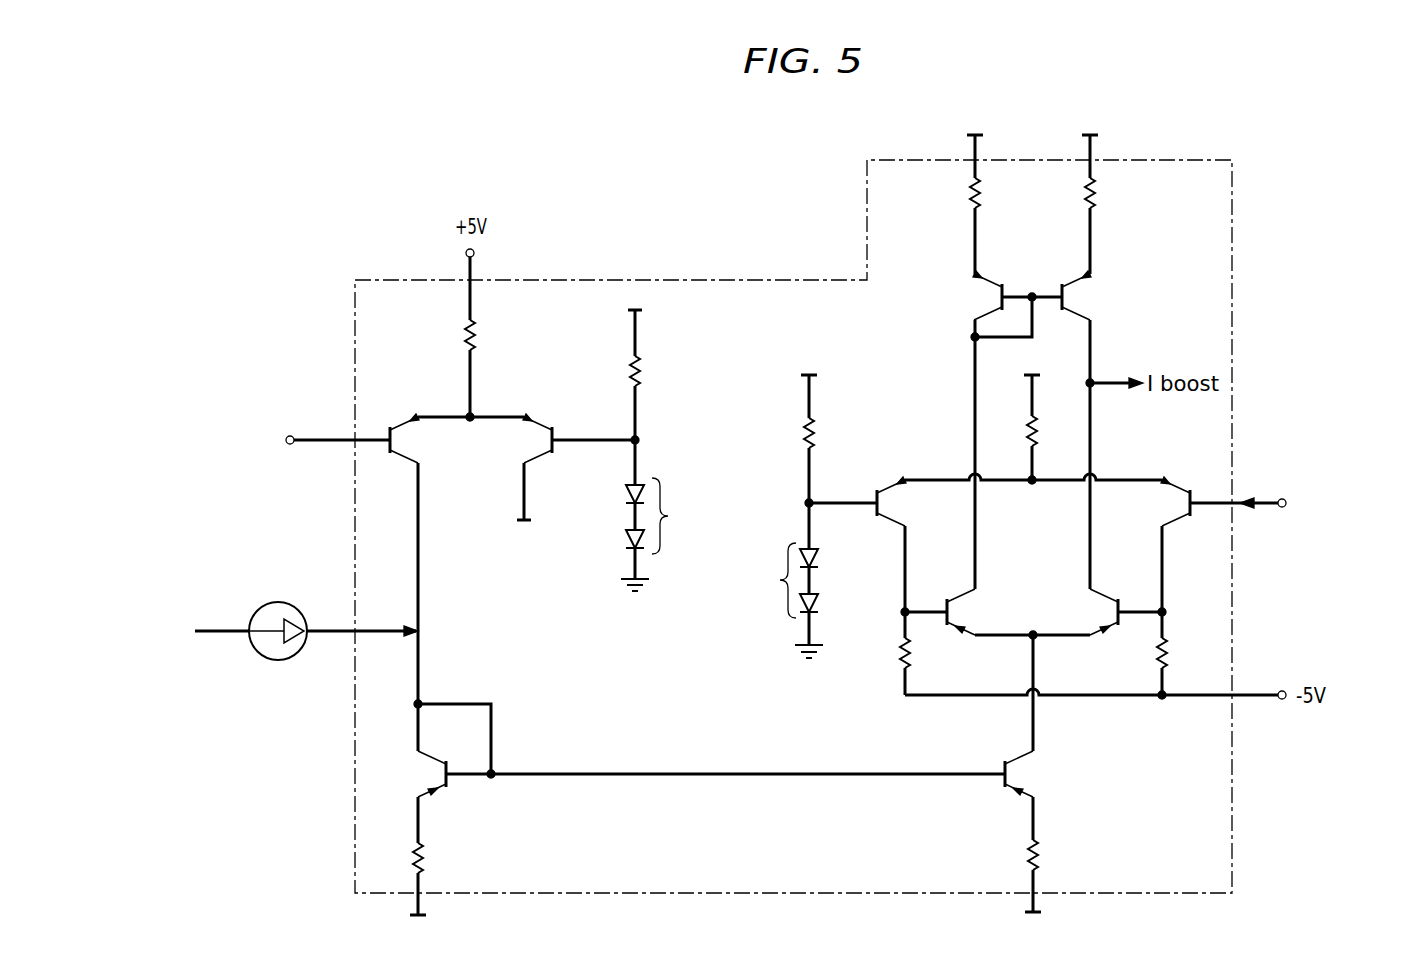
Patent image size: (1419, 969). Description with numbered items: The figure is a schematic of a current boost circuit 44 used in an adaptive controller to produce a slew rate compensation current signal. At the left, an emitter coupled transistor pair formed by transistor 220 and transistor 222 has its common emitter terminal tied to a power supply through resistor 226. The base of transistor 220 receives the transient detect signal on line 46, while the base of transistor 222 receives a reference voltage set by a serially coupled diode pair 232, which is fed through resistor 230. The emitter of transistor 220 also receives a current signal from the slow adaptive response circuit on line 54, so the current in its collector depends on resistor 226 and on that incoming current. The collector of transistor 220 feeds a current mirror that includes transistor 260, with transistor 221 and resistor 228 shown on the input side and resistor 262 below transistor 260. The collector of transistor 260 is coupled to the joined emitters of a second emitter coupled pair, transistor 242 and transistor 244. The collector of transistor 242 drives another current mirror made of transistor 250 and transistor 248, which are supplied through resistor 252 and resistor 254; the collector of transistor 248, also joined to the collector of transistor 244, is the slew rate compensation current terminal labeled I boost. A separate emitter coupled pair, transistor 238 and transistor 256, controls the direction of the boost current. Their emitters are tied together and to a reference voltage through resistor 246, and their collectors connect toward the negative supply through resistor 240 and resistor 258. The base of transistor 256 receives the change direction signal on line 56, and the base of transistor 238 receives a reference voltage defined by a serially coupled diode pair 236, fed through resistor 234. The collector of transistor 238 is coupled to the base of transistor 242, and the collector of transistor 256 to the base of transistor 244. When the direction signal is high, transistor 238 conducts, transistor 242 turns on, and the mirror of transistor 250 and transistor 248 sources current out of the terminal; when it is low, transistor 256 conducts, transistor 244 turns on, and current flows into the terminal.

The current boost circuit 44 is at (1179, 893).
The line 46 is at (327, 446).
The line 54 is at (223, 633).
The line 56 is at (1264, 496).
The transistor 220 is at (398, 442).
The transistor 221 is at (427, 774).
The transistor 222 is at (542, 428).
The resistor 226 is at (460, 334).
The resistor 228 is at (427, 845).
The resistor 230 is at (645, 360).
The serially coupled diode pair 232 is at (662, 515).
The resistor 234 is at (827, 418).
The serially coupled diode pair 236 is at (783, 580).
The transistor 238 is at (894, 502).
The transistor 240 is at (908, 657).
The transistor 242 is at (963, 615).
The transistor 244 is at (1102, 608).
The resistor 246 is at (1040, 420).
The transistor 248 is at (1077, 303).
The transistor 250 is at (988, 302).
The resistor 252 is at (980, 201).
The resistor 254 is at (1085, 198).
The transistor 256 is at (1173, 503).
The resistor 258 is at (1159, 654).
The transistor 260 is at (1027, 777).
The resistor 262 is at (1023, 852).